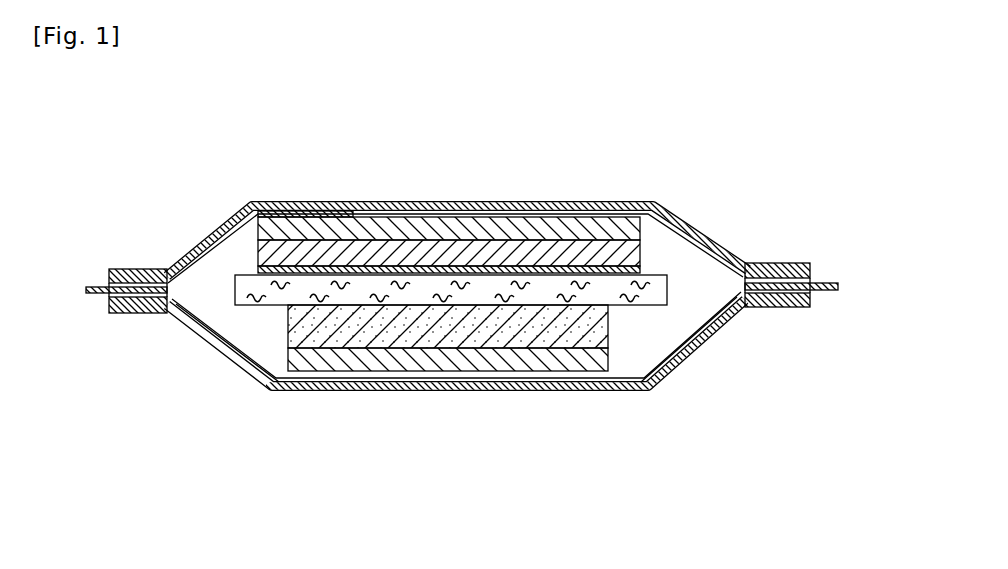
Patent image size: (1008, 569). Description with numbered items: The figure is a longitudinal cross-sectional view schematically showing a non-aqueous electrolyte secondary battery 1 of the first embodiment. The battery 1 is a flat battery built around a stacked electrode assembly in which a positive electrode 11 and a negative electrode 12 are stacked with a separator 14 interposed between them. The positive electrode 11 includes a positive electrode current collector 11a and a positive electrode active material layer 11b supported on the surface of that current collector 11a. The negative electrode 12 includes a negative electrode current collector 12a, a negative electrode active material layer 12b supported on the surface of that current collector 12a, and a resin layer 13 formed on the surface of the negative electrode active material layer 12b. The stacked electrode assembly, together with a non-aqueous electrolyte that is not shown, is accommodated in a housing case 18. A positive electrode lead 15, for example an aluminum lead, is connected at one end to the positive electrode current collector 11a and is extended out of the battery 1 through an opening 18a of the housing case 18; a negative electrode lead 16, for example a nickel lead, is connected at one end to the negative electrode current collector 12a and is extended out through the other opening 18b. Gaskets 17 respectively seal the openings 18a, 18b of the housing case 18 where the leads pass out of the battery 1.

The non-aqueous electrolyte secondary battery 1 is at (153, 155).
The positive electrode 11 is at (448, 411).
The positive electrode current collector 11a is at (462, 358).
The positive electrode active material layer 11b is at (412, 330).
The negative electrode 12 is at (449, 175).
The negative electrode current collector 12a is at (477, 223).
The negative electrode active material layer 12b is at (400, 246).
The resin layer 13 is at (290, 270).
The separator 14 is at (650, 278).
The positive electrode lead 15 is at (717, 337).
The negative electrode lead 16 is at (220, 232).
The gasket 17 is at (130, 308).
The housing case 18 is at (222, 350).
The opening 18a is at (812, 283).
The opening 18b is at (102, 296).